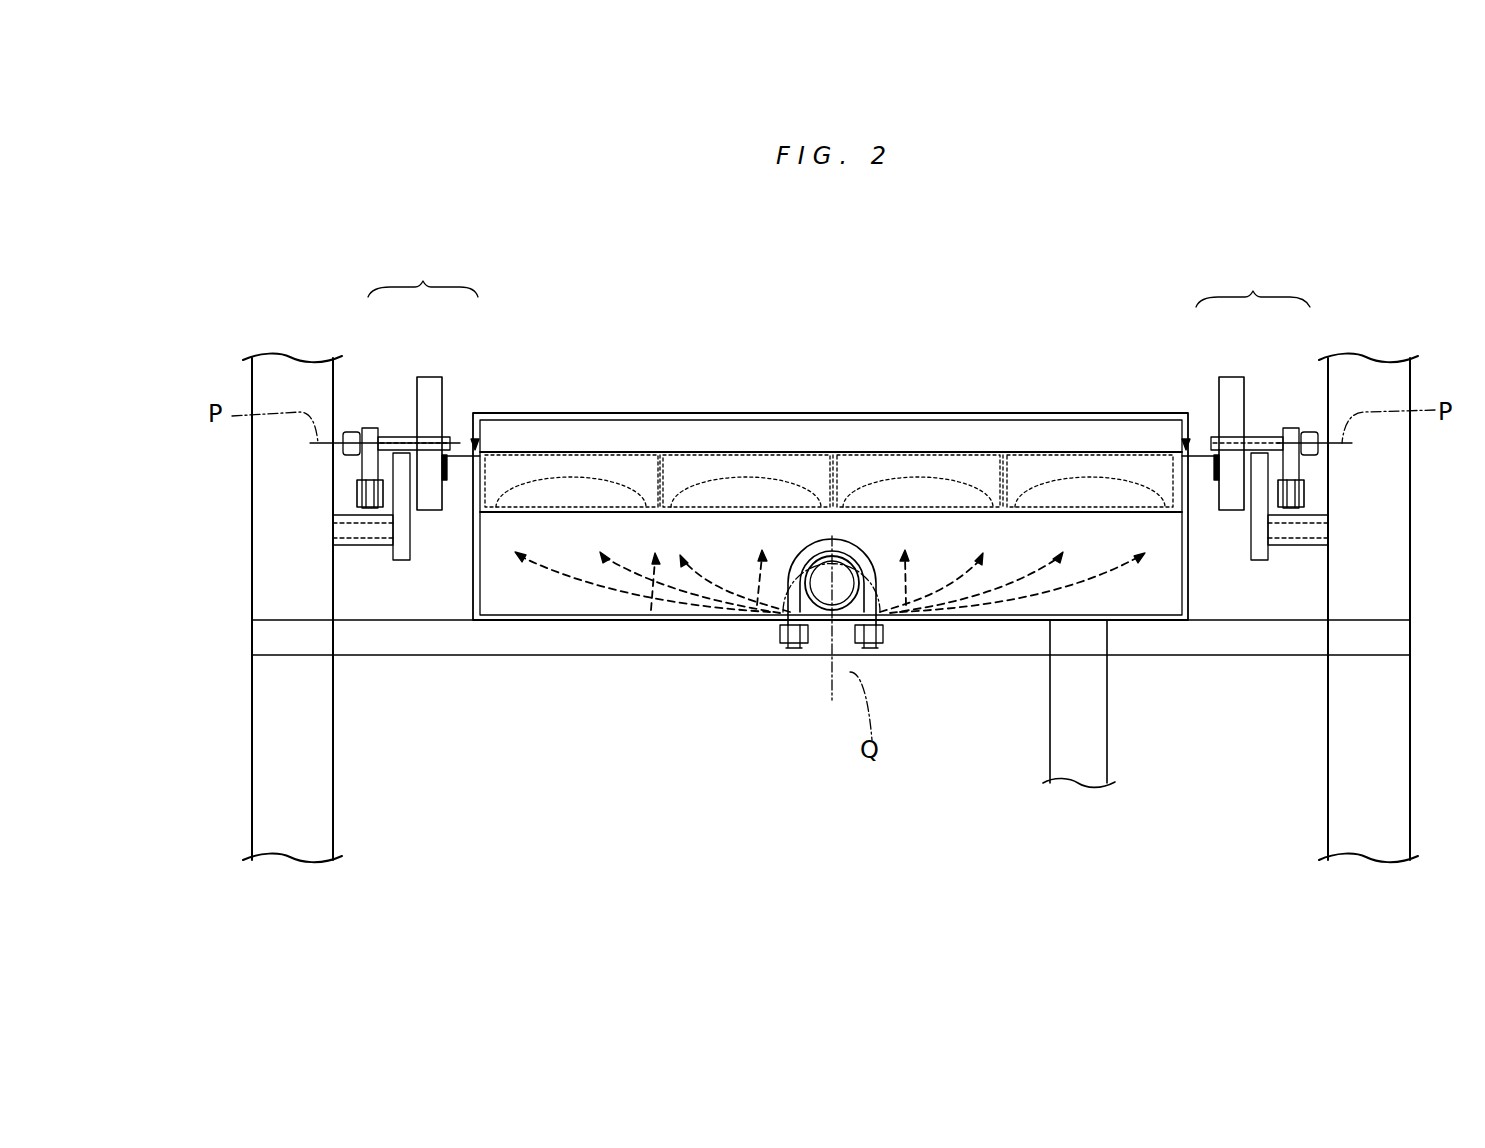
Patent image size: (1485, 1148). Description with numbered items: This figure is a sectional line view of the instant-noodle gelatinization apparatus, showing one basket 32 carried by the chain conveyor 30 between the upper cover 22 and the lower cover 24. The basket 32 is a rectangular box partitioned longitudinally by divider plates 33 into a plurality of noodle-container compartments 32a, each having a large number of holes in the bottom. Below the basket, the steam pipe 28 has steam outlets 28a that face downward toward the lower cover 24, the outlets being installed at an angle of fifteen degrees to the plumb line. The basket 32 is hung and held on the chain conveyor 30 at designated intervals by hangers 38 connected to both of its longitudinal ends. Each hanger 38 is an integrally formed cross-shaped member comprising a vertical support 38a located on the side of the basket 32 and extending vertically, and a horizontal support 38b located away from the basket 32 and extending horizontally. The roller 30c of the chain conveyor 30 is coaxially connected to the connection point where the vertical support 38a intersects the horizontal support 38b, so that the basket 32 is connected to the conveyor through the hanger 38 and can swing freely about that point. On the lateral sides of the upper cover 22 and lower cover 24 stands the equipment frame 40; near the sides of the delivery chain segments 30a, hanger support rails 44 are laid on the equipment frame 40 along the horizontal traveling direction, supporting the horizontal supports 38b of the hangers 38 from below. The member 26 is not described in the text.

The upper cover 22 is at (908, 413).
The lower cover 24 is at (583, 622).
The magnetic device 26 is at (650, 618).
The steam pipe 28 is at (823, 612).
The steam outlets 28a is at (790, 598).
The chain conveyor 30 is at (1318, 470).
The delivery chain segments 30a is at (345, 470).
The roller 30c is at (373, 430).
The basket 32 is at (790, 452).
The noodle-container compartments 32a is at (560, 462).
The divider plates 33 is at (655, 463).
The hanger 38 is at (839, 280).
The vertical support 38a is at (433, 380).
The horizontal support 38b is at (403, 437).
The equipment frame 40 is at (275, 748).
The hanger support rails 44 is at (405, 562).